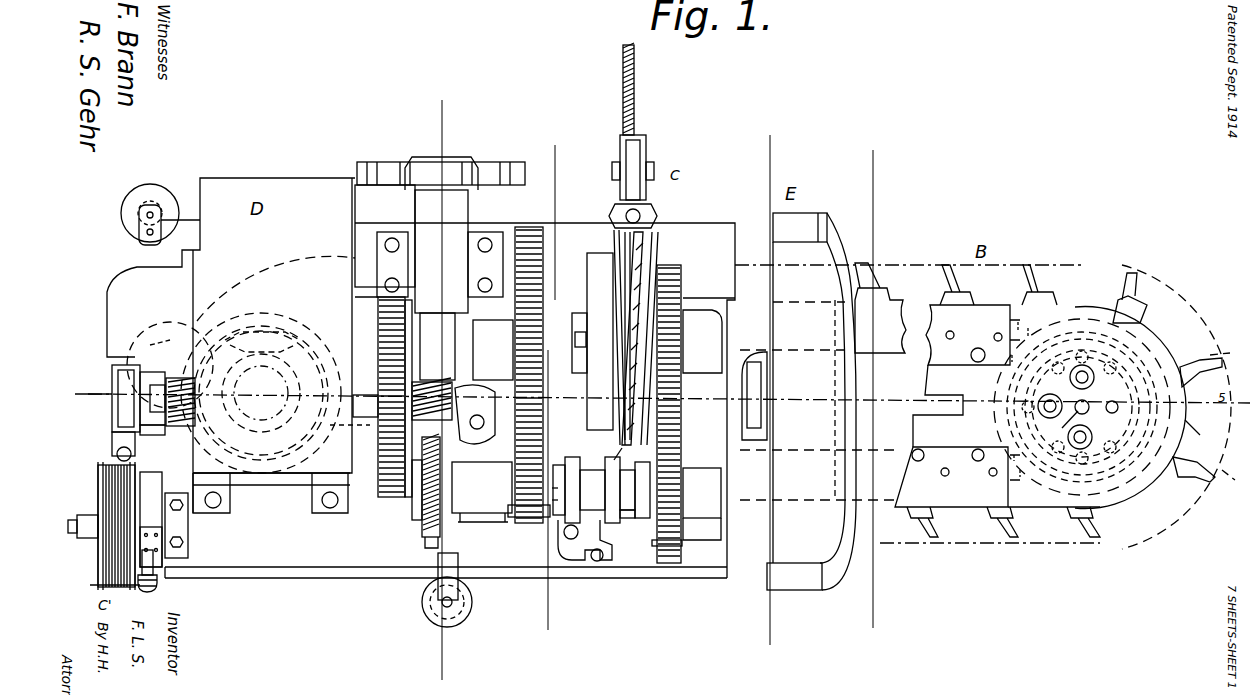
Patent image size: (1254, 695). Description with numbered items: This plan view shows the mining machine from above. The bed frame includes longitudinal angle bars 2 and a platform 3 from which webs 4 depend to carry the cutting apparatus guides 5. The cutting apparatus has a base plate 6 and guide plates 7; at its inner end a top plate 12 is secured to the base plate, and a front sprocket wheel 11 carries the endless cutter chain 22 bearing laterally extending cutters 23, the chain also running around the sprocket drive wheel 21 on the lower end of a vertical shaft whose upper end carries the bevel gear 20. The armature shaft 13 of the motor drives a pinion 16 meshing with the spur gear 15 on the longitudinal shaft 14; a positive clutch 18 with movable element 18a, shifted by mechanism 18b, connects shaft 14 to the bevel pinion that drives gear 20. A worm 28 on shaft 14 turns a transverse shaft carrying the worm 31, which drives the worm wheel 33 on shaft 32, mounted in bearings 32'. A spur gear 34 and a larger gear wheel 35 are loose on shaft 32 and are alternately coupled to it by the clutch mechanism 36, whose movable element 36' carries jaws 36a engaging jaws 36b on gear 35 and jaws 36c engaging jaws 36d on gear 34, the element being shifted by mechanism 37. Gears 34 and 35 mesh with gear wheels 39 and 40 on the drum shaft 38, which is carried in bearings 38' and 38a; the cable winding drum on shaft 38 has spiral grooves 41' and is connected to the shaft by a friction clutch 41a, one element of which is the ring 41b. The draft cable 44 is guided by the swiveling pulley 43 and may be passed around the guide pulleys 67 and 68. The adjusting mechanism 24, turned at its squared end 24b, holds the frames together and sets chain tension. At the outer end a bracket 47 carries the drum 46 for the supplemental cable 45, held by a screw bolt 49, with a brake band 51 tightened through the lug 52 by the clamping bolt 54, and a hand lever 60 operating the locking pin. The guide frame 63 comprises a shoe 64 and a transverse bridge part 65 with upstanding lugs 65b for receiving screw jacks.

The guide pulley 67 is at (158, 200).
The base plate 6 is at (788, 365).
The shoe 64 is at (426, 600).
The pinion 16 is at (398, 322).
The platform 3 is at (460, 394).
The armature shaft 13 is at (377, 310).
The bevel gear 20 is at (304, 310).
The sprocket drive wheel 21 is at (262, 340).
The worm gear 28 is at (436, 368).
The longitudinally arranged shaft 14 is at (410, 414).
The adjusting mechanism 24 is at (372, 430).
The bearing 38' is at (482, 421).
The worm wheel 33 is at (428, 538).
The worm 31 is at (414, 500).
The spur gear 15 is at (395, 480).
The gear wheel 39 is at (528, 240).
The spur gear 34 is at (528, 520).
The guide plates 7 is at (898, 318).
The drum shaft 38 is at (569, 334).
The friction clutch 41a is at (586, 332).
The ring or casing 41b is at (600, 258).
The spiral grooves 41' is at (656, 326).
The cable 44 is at (636, 100).
The pulley or sheave 43 is at (648, 156).
The gear wheel 40 is at (672, 298).
The gear wheel 35 is at (662, 565).
The bearing 38a is at (702, 341).
The clutch jaws 36b is at (702, 493).
The bearings 32' is at (702, 534).
The longitudinally arranged shaft 32 is at (562, 463).
The clutch shifting mechanism 37 is at (607, 479).
The clutch mechanism 36 is at (582, 542).
The movable clutch element 36' is at (609, 519).
The clutch jaws 36a is at (627, 531).
The clutch jaws 36c is at (556, 505).
The clutch jaws 36d is at (556, 490).
The cutting apparatus guides 5 is at (118, 398).
The positive clutch 18 is at (168, 396).
The movable clutch element 18a is at (155, 333).
The clutch operating mechanism 18b is at (120, 425).
The brake band 51 is at (185, 440).
The supplemental cable 45 is at (98, 482).
The screw bolt 49 is at (72, 512).
The drum 46 is at (100, 568).
The bracket 47 is at (185, 535).
The hand lever 60 is at (182, 548).
The clamping bolt 54 is at (170, 565).
The clamping lug 52 is at (158, 578).
The guide pulley 68 is at (142, 592).
The angle bars 2 is at (765, 388).
The webs 4 is at (869, 391).
The upstanding rounded lugs 65b is at (822, 225).
The guide frame 63 is at (828, 262).
The transverse bridge part 65 is at (850, 402).
The squared shaft end 24b is at (766, 412).
The top plate 12 is at (1062, 505).
The endless cutter chain 22 is at (961, 525).
The cutters 23 is at (1010, 540).
The front sprocket wheel 11 is at (1197, 434).